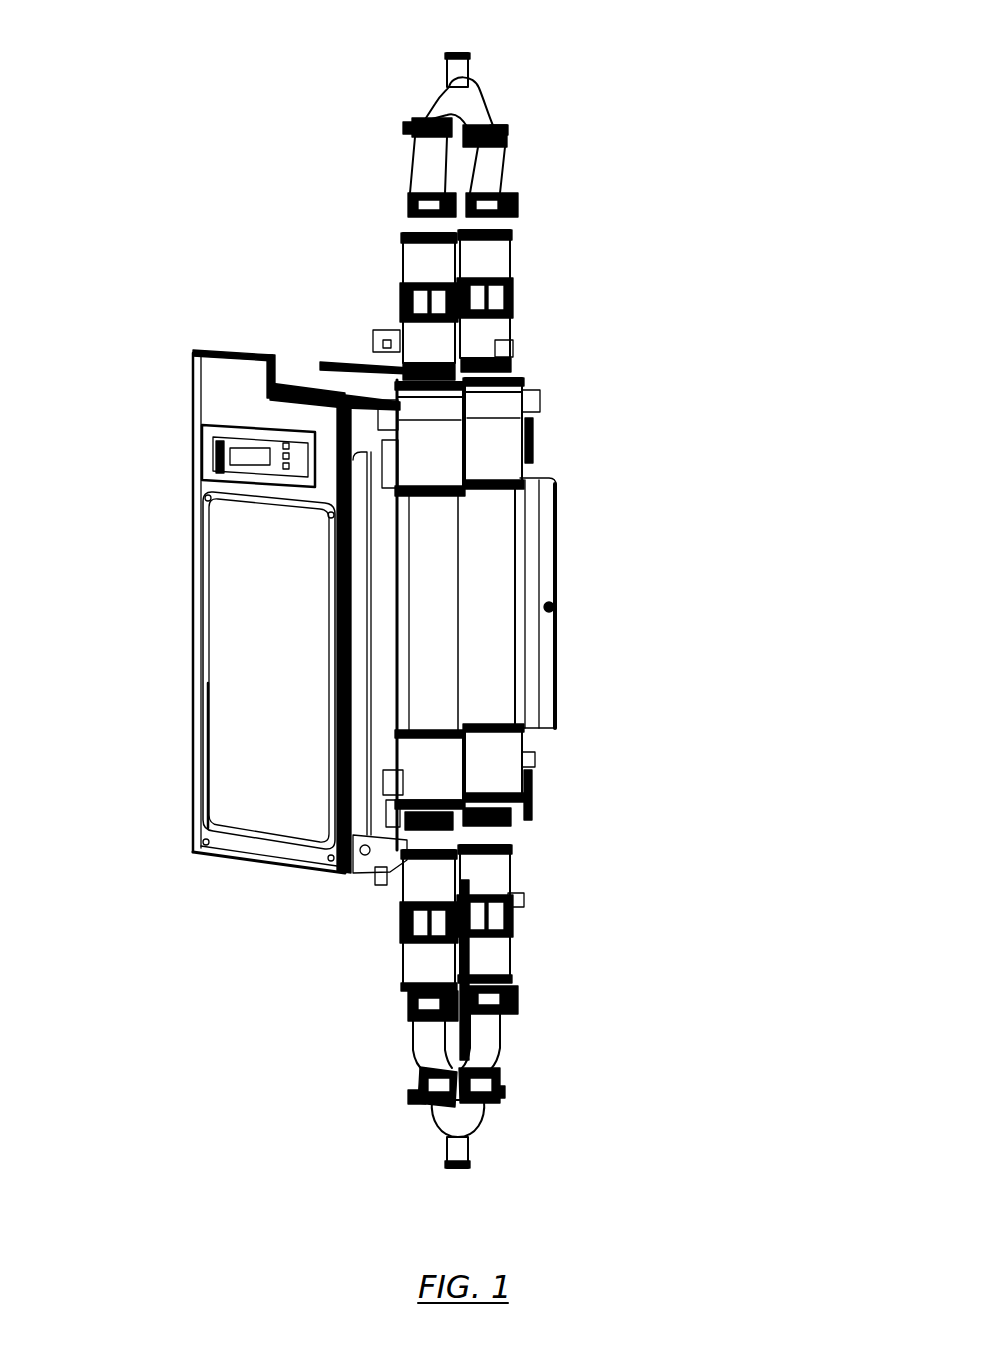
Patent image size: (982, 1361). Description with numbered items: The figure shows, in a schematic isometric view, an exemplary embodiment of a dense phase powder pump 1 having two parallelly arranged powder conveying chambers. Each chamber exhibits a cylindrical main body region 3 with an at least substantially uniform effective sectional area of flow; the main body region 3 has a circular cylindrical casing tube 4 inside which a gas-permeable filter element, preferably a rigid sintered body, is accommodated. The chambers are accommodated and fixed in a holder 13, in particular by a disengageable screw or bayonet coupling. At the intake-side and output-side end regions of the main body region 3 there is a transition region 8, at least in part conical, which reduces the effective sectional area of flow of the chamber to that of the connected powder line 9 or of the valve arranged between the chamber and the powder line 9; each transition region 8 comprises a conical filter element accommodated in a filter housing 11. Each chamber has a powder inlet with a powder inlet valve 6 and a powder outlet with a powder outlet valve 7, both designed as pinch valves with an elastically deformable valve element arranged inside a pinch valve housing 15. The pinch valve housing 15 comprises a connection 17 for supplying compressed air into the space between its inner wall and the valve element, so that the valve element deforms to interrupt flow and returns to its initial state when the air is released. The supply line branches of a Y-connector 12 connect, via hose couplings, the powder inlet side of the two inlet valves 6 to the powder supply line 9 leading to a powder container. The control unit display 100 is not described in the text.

The dense phase powder pump 1 is at (161, 121).
The control unit display 100 is at (252, 456).
The main body region 3 is at (586, 615).
The casing tube 4 is at (493, 553).
The powder inlet valve 6 is at (422, 960).
The powder outlet valve 7 is at (418, 267).
The transition region 8 is at (599, 571).
The powder line 9 is at (460, 73).
The filter housing 11 is at (440, 445).
The Y-connector 12 is at (470, 105).
The holder 13 is at (552, 658).
The pinch valve housing 15 is at (459, 626).
The connection 17 is at (520, 900).